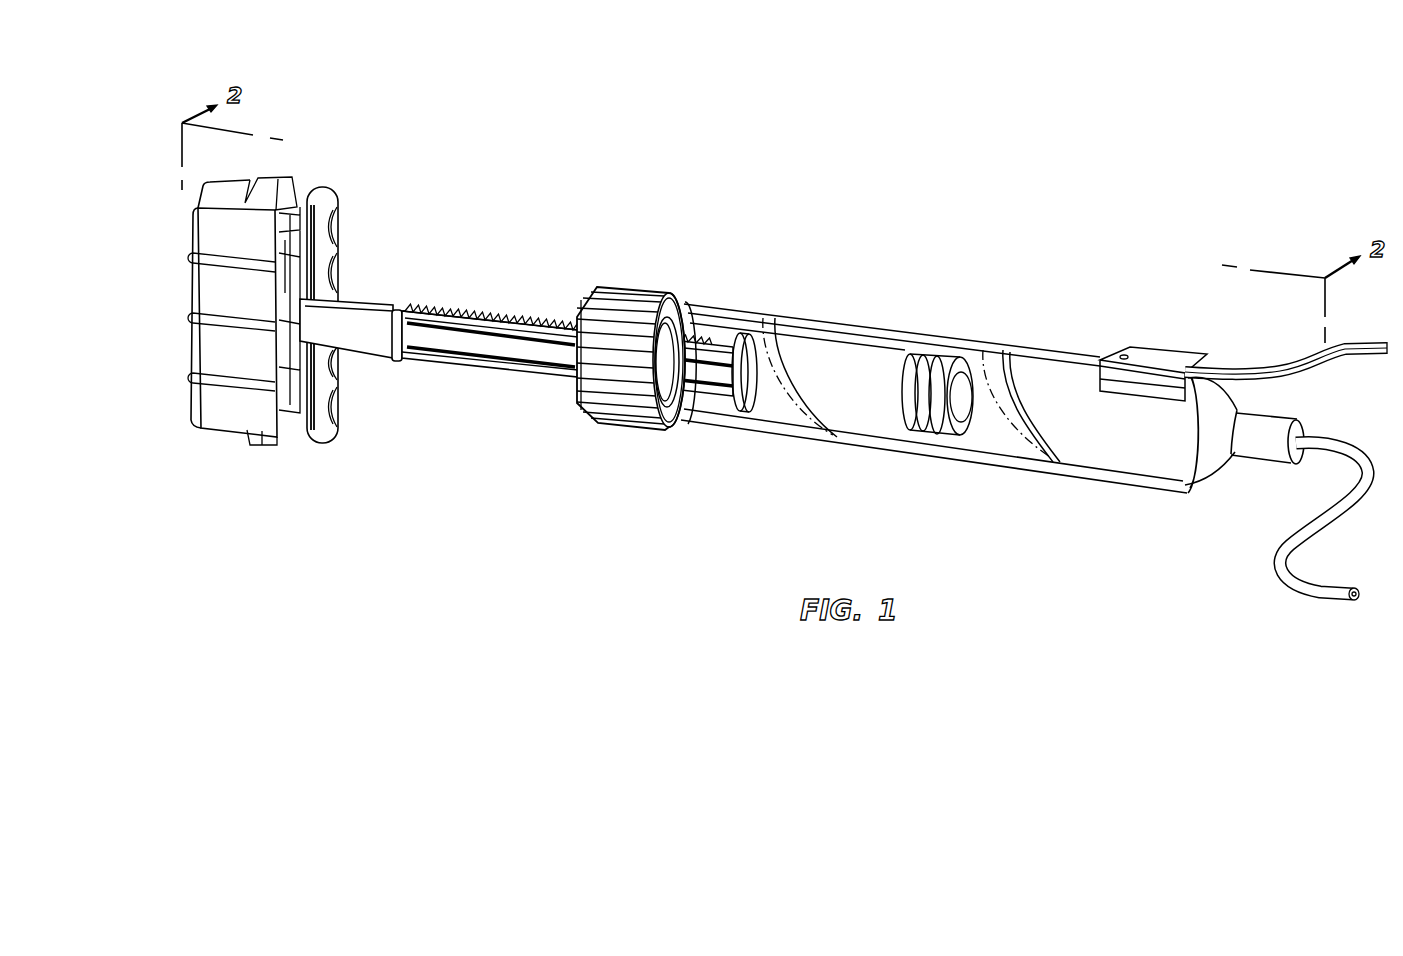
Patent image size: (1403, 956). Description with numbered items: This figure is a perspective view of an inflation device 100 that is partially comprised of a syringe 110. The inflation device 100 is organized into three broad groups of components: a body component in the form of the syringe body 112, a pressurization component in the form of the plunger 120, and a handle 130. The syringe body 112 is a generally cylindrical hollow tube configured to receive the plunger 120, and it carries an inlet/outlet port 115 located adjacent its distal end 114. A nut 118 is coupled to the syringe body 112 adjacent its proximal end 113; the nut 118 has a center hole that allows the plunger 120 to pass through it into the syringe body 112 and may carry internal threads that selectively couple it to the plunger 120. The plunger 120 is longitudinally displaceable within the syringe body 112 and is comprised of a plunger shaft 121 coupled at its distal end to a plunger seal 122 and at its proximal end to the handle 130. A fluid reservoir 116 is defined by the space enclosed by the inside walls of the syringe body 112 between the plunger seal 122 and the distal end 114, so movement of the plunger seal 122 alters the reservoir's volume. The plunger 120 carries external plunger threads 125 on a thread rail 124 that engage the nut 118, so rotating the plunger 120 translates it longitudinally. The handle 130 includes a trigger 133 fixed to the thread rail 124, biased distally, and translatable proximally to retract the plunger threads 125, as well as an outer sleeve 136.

The inflation device 100 is at (828, 176).
The syringe 110 is at (732, 285).
The syringe body 112 is at (865, 437).
The proximal end 113 is at (571, 406).
The distal end 114 is at (1244, 400).
The inlet/outlet port 115 is at (1310, 460).
The fluid reservoir 116 is at (1082, 413).
The nut 118 is at (638, 300).
The plunger 120 is at (481, 298).
The plunger shaft 121 is at (718, 352).
The plunger seal 122 is at (928, 361).
The thread rail 124 is at (509, 311).
The plunger threads 125 is at (555, 316).
The handle 130 is at (268, 475).
The trigger 133 is at (325, 195).
The outer sleeve 136 is at (218, 282).